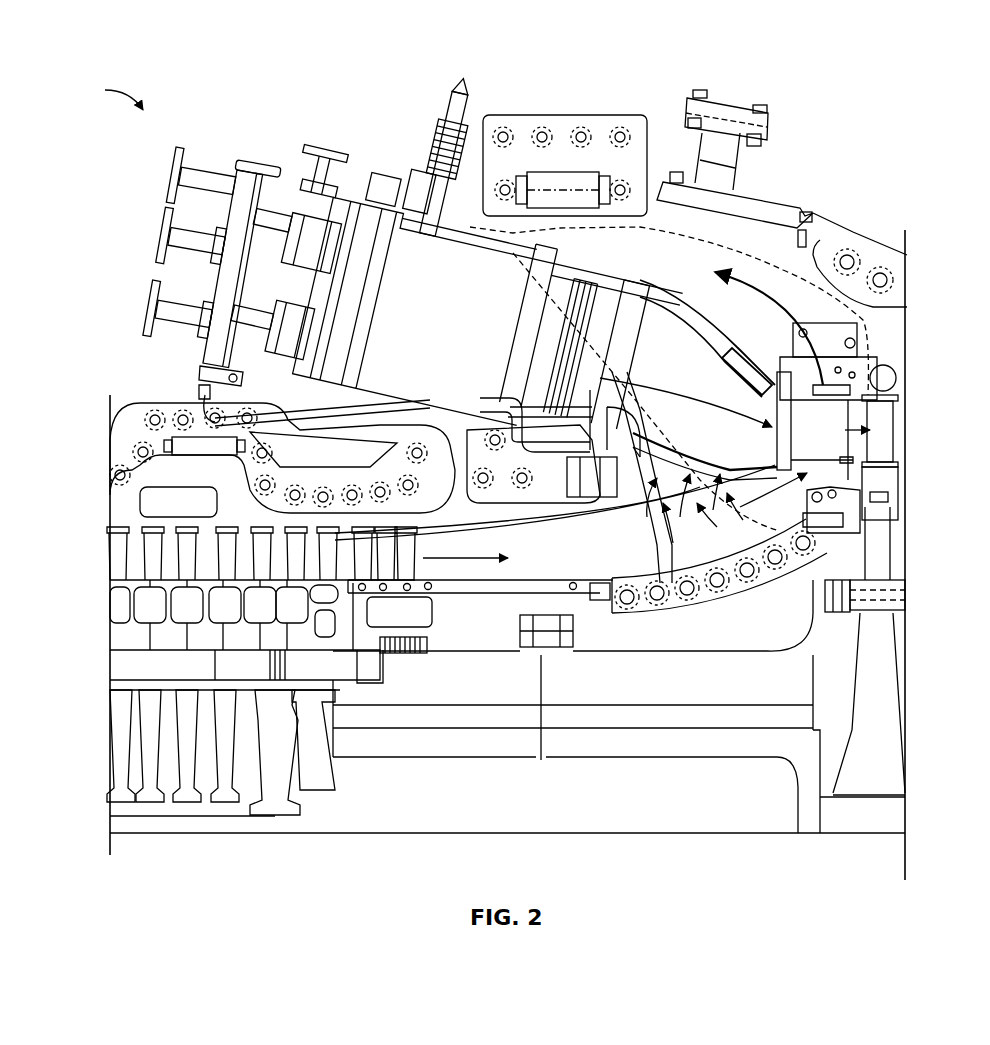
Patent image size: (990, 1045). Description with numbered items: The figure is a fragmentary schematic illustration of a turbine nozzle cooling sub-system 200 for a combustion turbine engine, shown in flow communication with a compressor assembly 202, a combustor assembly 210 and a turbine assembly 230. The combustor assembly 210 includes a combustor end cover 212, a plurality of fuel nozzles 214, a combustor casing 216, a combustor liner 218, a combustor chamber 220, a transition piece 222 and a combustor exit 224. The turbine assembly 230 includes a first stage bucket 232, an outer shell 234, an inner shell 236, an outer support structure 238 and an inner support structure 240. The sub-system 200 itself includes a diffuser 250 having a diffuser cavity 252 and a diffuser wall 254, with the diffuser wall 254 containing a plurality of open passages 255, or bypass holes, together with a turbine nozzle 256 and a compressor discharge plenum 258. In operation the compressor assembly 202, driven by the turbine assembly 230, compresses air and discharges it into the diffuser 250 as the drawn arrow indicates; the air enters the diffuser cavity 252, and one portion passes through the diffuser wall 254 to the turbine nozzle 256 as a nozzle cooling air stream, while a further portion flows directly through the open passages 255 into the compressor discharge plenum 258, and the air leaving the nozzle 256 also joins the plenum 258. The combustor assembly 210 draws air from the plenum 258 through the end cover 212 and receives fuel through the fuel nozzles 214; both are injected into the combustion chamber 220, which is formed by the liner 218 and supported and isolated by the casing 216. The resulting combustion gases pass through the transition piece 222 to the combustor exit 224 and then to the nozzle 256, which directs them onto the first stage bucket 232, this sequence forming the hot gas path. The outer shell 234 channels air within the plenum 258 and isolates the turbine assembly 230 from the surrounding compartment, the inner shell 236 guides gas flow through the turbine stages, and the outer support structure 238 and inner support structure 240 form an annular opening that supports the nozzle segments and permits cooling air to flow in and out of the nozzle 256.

The turbine nozzle cooling sub-system 200 is at (101, 95).
The compressor assembly 202 is at (100, 642).
The combustor assembly 210 is at (347, 182).
The combustor end cover 212 is at (235, 248).
The fuel nozzles 214 is at (308, 223).
The combustor casing 216 is at (463, 193).
The combustor liner 218 is at (468, 250).
The combustor chamber 220 is at (471, 356).
The transition piece 222 is at (710, 317).
The combustor exit 224 is at (775, 452).
The turbine assembly 230 is at (890, 728).
The first stage bucket 232 is at (838, 437).
The outer shell 234 is at (767, 193).
The inner shell 236 is at (843, 380).
The outer support structure 238 is at (897, 402).
The inner support structure 240 is at (847, 492).
The diffuser 250 is at (488, 582).
The diffuser cavity 252 is at (557, 567).
The diffuser wall 254 is at (613, 510).
The open passages 255 is at (658, 480).
The turbine nozzle 256 is at (892, 468).
The compressor discharge plenum 258 is at (684, 270).